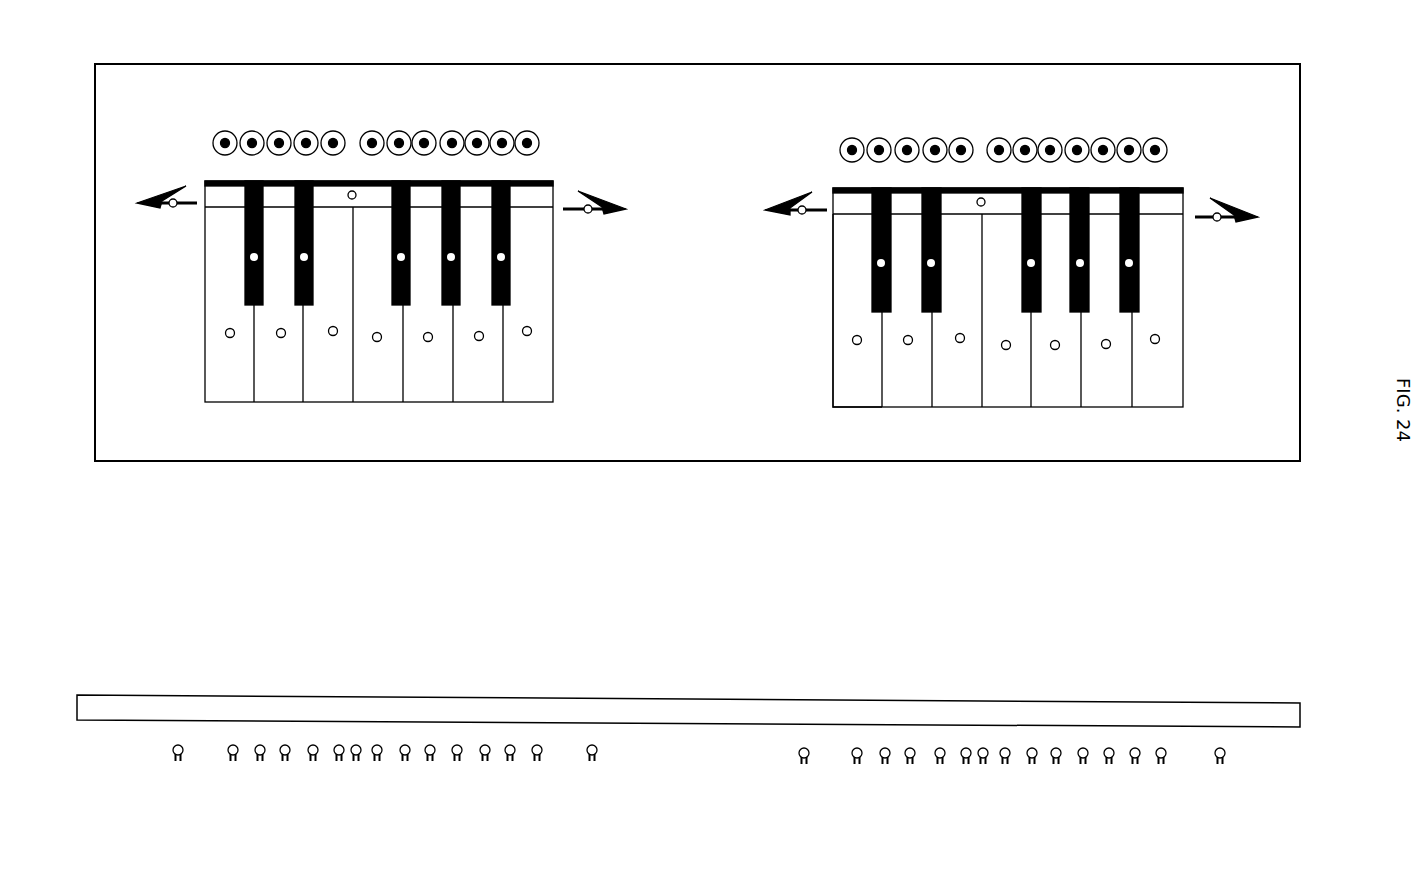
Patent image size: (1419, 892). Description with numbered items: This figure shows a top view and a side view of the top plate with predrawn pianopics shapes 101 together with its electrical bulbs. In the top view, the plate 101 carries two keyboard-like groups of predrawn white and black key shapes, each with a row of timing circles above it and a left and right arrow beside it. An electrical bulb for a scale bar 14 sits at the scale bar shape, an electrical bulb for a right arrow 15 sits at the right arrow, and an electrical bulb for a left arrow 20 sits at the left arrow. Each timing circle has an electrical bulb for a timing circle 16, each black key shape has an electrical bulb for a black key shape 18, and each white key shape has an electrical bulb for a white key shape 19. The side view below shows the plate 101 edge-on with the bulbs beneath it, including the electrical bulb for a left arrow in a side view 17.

The electrical bulb for a scale bar 14 is at (352, 191).
The electrical bulb for a right arrow 15 is at (589, 205).
The electrical bulb for a timing circle 16 is at (1155, 138).
The electrical bulb for a left arrow in a side view 17 is at (795, 763).
The electrical bulb for a black key shape 18 is at (1135, 263).
The electrical bulb for a white key shape 19 is at (855, 344).
The electrical bulb for a left arrow 20 is at (800, 214).
The top plate with predrawn pianopics shapes 101 is at (698, 447).